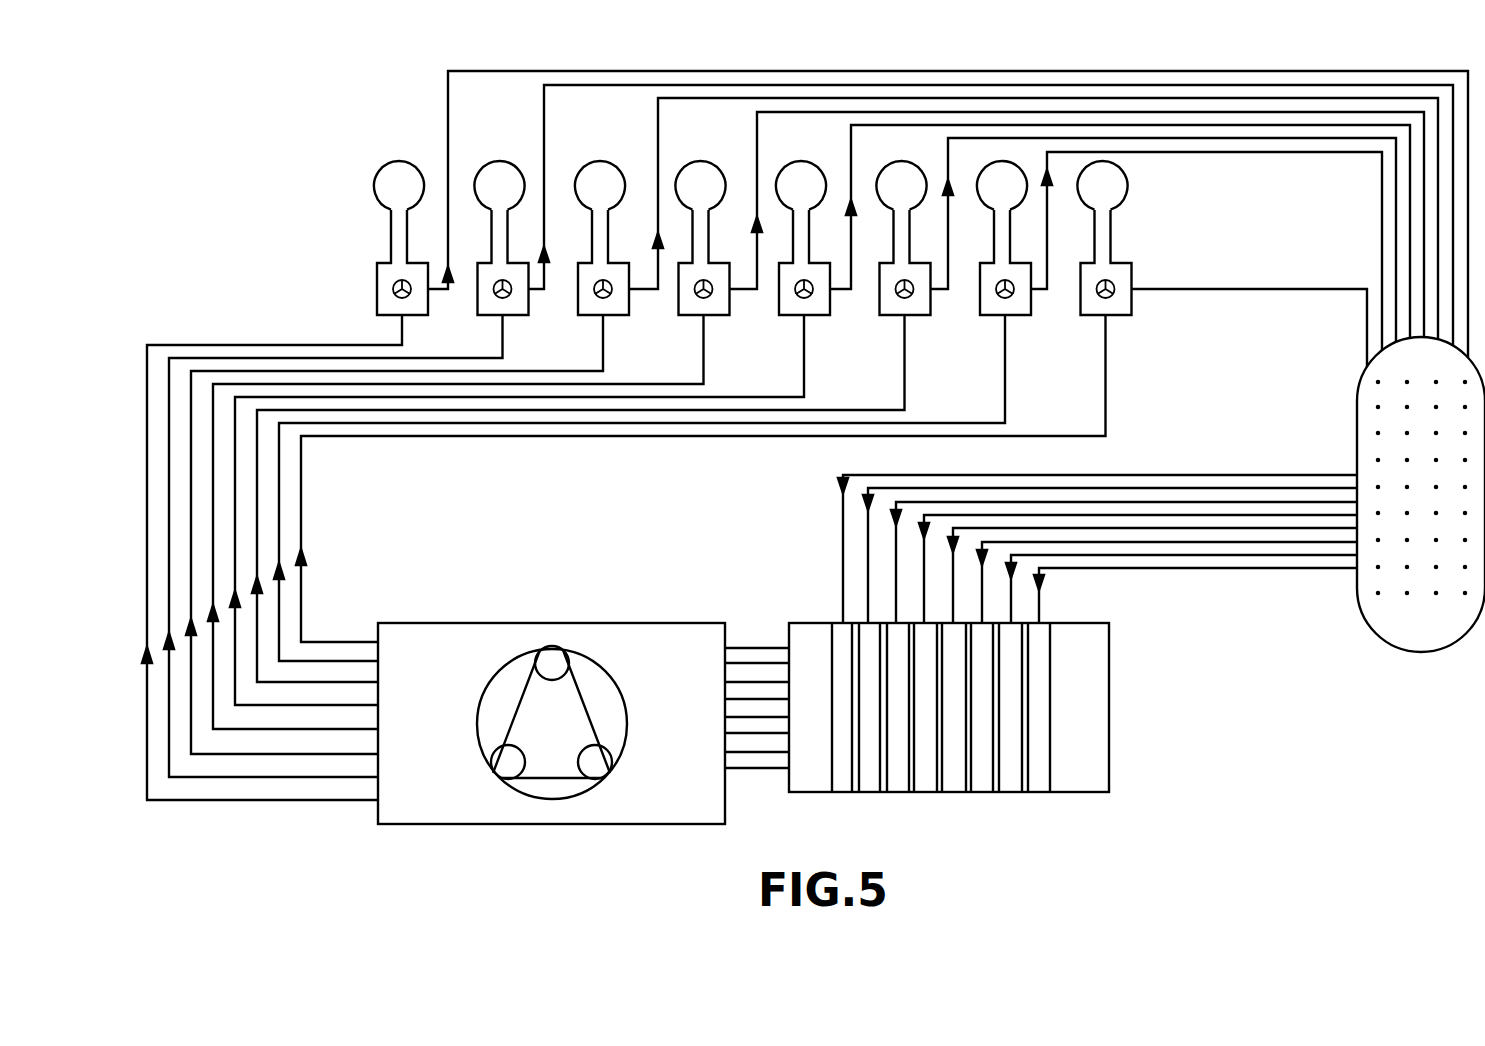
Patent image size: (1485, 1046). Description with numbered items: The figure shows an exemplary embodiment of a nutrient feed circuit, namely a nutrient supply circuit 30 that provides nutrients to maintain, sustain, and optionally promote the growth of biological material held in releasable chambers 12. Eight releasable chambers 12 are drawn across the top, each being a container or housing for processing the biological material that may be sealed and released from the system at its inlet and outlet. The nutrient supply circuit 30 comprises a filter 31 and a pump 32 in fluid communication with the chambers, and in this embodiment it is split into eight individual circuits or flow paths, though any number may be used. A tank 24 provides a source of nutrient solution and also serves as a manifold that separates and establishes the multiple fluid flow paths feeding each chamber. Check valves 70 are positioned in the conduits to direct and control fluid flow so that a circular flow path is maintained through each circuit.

The releasable chamber 12 is at (398, 173).
The check valve 70 is at (301, 557).
The nutrient supply circuit 30 is at (1160, 475).
The filter 31 is at (1393, 622).
The tank 24 is at (1087, 758).
The pump 32 is at (690, 800).